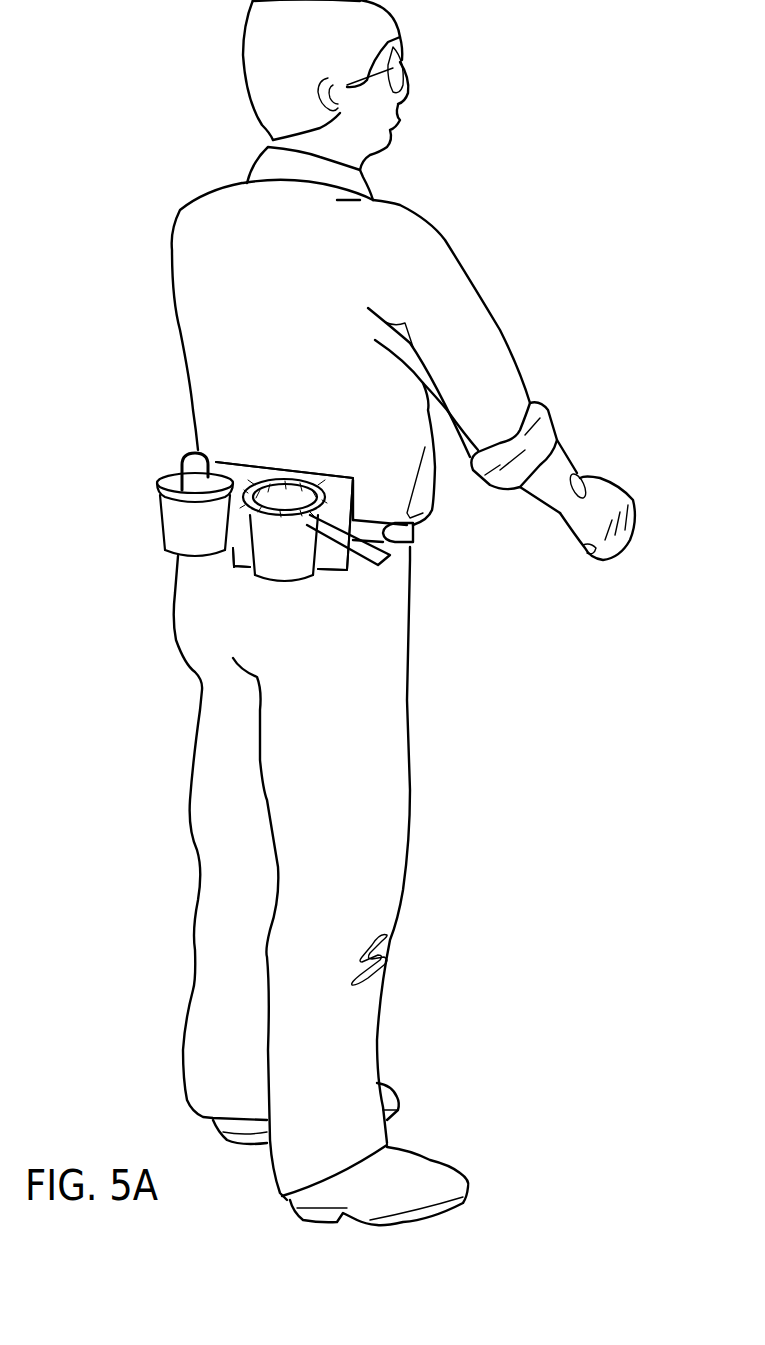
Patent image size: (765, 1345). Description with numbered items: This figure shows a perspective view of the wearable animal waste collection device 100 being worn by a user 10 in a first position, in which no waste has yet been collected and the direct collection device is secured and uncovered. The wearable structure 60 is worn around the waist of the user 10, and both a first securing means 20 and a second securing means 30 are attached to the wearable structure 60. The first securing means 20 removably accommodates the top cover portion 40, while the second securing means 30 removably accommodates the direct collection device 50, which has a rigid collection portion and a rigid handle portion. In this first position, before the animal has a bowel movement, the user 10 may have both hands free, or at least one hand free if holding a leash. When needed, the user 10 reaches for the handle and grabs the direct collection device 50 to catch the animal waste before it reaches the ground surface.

The user 10 is at (407, 280).
The wearable animal waste collection device 100 is at (170, 423).
The first securing means 20 is at (183, 533).
The second securing means 30 is at (287, 552).
The top cover portion 40 is at (167, 473).
The direct collection device 50 is at (405, 542).
The wearable structure 60 is at (233, 550).